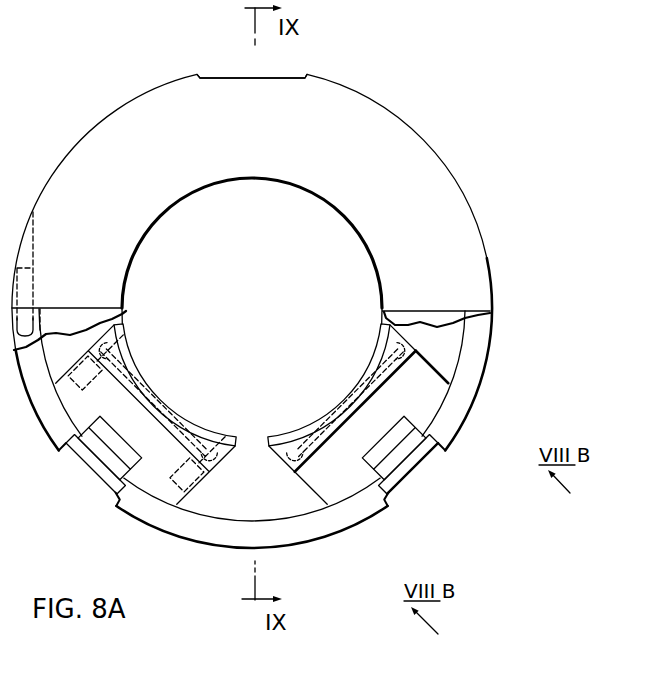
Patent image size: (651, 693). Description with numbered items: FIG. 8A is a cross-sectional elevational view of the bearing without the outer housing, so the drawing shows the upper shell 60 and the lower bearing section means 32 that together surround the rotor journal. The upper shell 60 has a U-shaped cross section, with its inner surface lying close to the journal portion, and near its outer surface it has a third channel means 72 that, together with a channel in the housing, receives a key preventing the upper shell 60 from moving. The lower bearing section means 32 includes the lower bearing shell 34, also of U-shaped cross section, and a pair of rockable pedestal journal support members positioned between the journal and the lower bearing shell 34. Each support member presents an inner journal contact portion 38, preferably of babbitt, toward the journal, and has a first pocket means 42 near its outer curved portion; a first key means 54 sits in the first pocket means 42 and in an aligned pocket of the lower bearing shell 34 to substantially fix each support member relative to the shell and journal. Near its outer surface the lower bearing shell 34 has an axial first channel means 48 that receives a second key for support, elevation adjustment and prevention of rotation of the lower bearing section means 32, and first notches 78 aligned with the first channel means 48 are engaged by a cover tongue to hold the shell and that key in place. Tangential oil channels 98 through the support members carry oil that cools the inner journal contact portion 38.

The lower bearing section means 32 is at (436, 371).
The lower bearing shell 34 is at (315, 533).
The inner journal contact portion 38 is at (383, 346).
The first pocket means 42 is at (410, 424).
The first channel means 48 is at (390, 497).
The first key means 54 is at (425, 437).
The upper shell 60 is at (438, 211).
The third channel means 72 is at (303, 72).
The first notches 78 is at (423, 465).
The tangential oil channels 98 is at (404, 350).